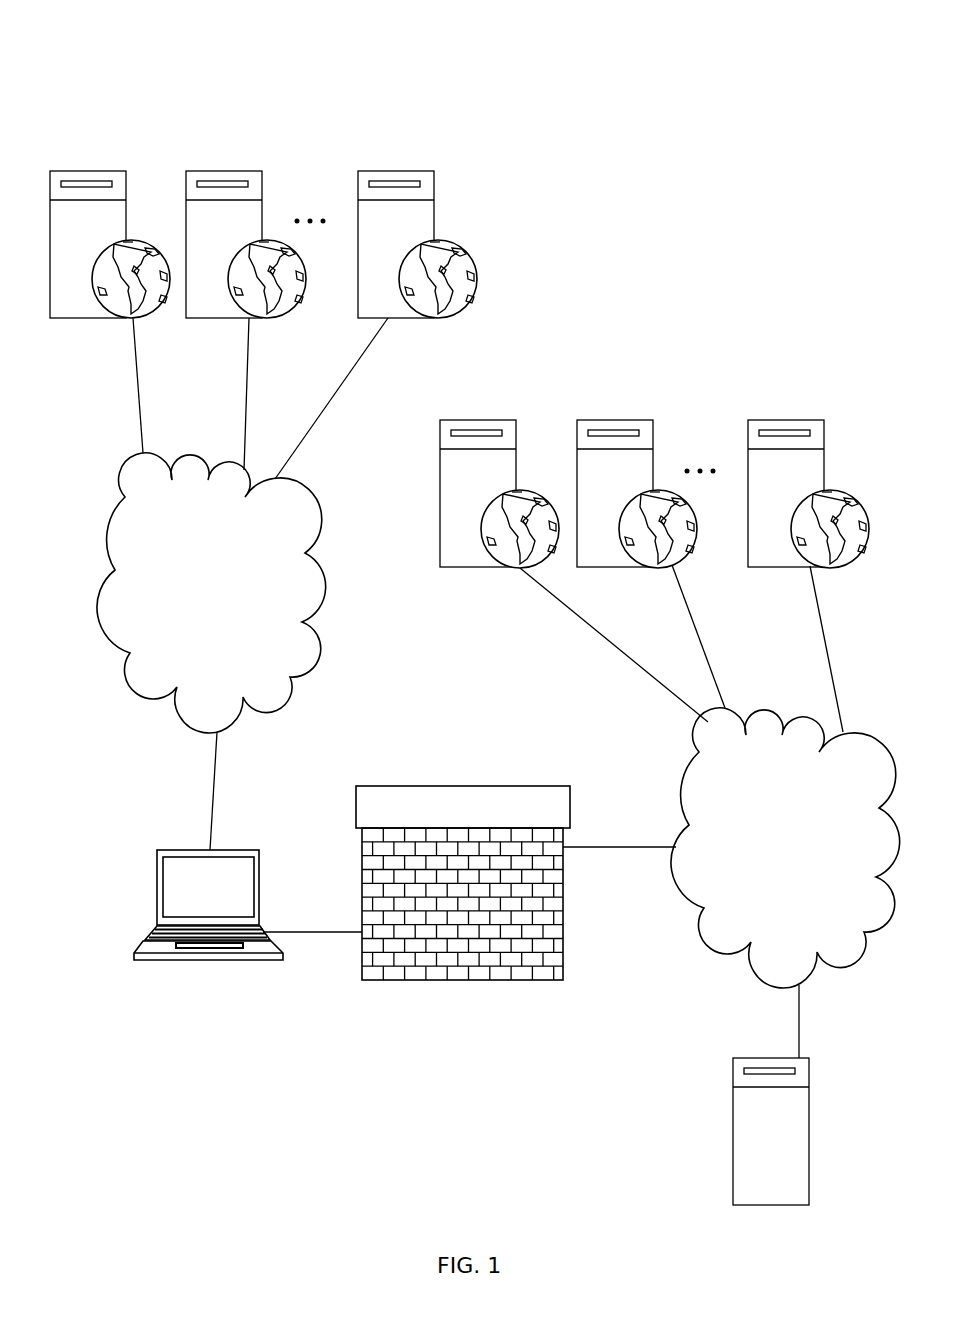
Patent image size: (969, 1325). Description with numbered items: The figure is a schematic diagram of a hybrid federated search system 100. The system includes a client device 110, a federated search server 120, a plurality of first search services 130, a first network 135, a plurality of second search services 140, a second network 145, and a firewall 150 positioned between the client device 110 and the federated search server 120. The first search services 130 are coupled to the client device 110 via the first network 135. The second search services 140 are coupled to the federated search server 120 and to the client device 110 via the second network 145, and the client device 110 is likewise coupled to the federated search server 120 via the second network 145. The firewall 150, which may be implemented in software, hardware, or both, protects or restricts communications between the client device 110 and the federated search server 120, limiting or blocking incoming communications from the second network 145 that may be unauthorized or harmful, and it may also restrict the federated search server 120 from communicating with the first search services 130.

The hybrid federated search system 100 is at (97, 62).
The client device 110 is at (172, 849).
The federated search server 120 is at (762, 1057).
The first search services 130 is at (80, 172).
The first network 135 is at (185, 455).
The second search services 140 is at (470, 420).
The second network 145 is at (760, 707).
The firewall 150 is at (448, 785).